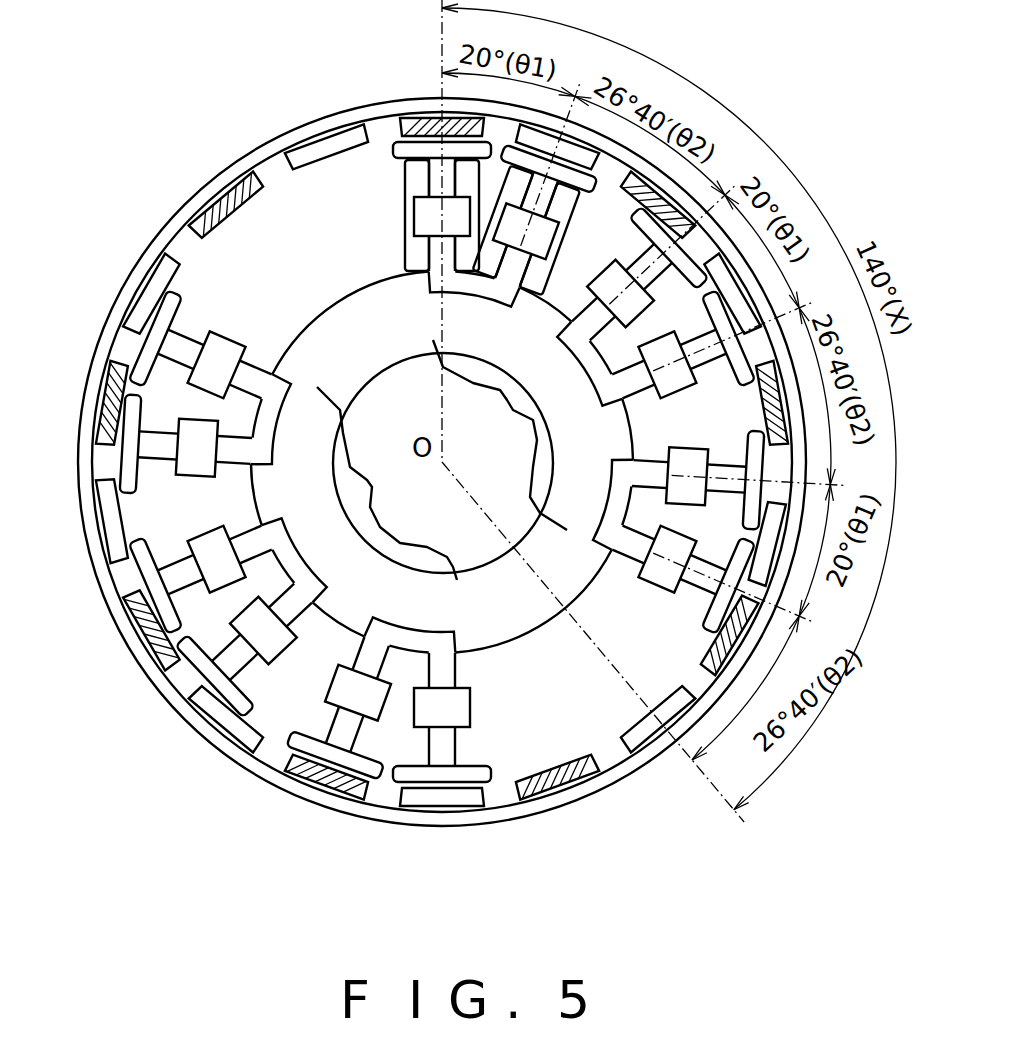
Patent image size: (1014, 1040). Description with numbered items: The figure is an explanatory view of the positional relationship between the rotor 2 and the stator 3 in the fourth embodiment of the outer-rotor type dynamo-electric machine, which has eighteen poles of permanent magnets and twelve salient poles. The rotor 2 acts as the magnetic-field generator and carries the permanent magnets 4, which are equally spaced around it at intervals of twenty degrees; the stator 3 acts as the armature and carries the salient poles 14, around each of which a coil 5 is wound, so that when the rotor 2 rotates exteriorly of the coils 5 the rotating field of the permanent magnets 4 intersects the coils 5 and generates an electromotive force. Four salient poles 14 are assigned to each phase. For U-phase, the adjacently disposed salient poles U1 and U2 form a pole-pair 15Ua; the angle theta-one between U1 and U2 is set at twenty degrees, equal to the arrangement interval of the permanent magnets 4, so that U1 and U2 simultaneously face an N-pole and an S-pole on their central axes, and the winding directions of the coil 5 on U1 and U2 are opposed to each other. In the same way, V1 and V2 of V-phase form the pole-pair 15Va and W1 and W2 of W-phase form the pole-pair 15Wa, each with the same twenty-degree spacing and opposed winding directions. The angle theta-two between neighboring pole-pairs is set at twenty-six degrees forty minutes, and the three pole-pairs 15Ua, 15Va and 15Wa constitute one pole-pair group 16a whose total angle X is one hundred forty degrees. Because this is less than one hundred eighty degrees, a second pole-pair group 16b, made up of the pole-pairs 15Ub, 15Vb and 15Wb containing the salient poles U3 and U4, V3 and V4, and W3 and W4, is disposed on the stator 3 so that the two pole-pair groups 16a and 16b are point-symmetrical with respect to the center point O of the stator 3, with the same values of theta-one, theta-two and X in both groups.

The rotor 2 is at (144, 671).
The stator 3 is at (270, 499).
The permanent magnet 4 is at (312, 148).
The coil 5 is at (404, 214).
The salient pole 14 is at (397, 144).
The pole-pair 15Ua is at (482, 292).
The pole-pair 15Ub is at (422, 623).
The pole-pair 15Va is at (598, 374).
The pole-pair 15Vb is at (297, 553).
The pole-pair 15Wa is at (608, 484).
The pole-pair 15Wb is at (287, 424).
The pole-pair group 16a is at (500, 435).
The pole-pair group 16b is at (387, 483).
The salient pole U1 is at (442, 214).
The salient pole U2 is at (529, 222).
The salient pole U3 is at (442, 717).
The salient pole U4 is at (355, 702).
The salient pole V1 is at (627, 287).
The salient pole V2 is at (676, 360).
The salient pole V3 is at (256, 637).
The salient pole V4 is at (207, 563).
The salient pole W1 is at (697, 476).
The salient pole W2 is at (676, 563).
The salient pole W3 is at (187, 446).
The salient pole W4 is at (207, 360).